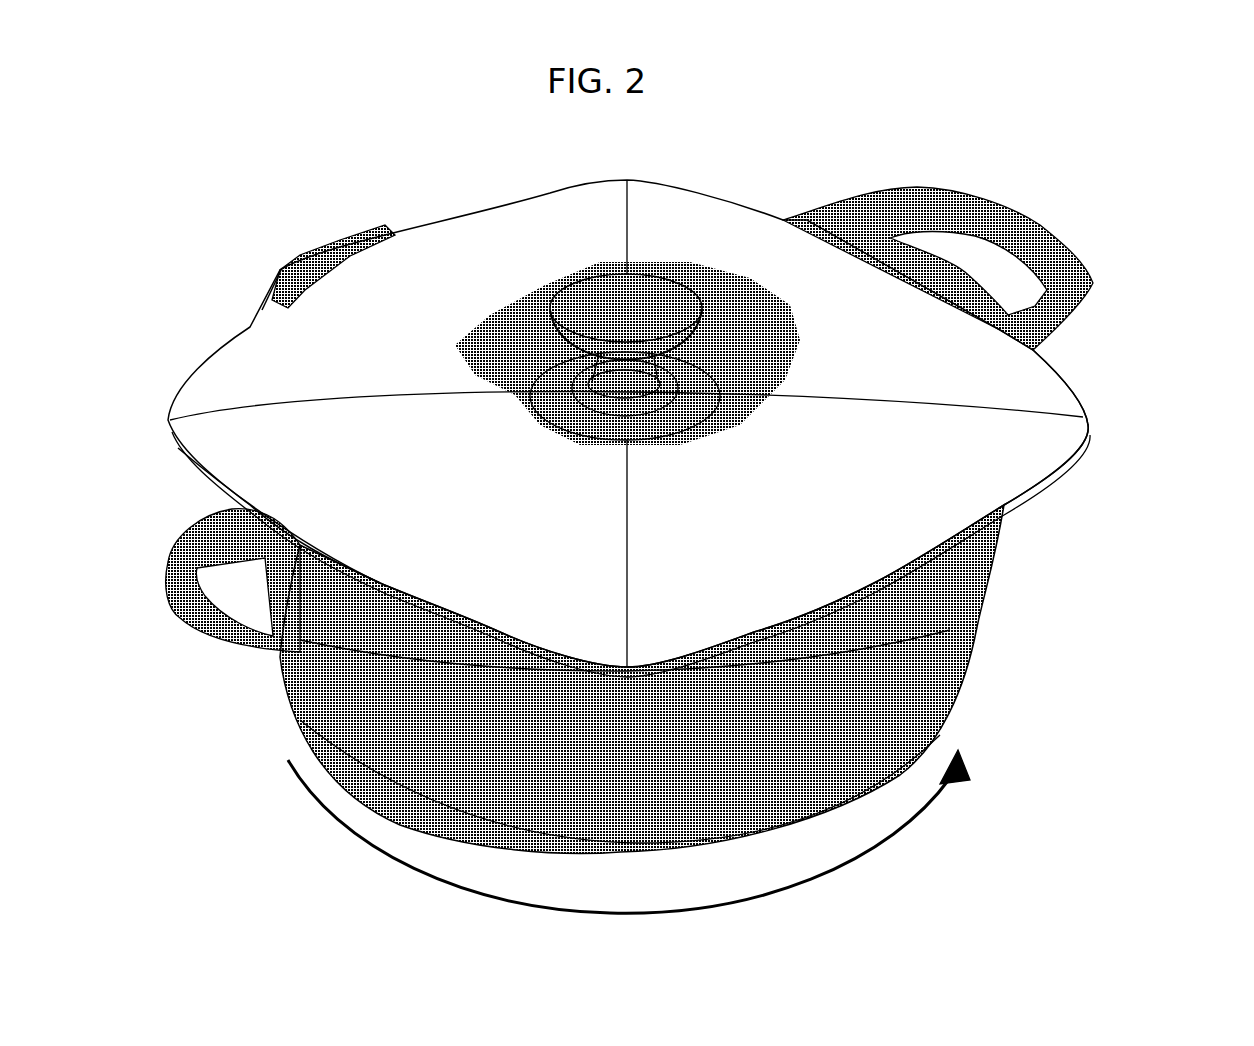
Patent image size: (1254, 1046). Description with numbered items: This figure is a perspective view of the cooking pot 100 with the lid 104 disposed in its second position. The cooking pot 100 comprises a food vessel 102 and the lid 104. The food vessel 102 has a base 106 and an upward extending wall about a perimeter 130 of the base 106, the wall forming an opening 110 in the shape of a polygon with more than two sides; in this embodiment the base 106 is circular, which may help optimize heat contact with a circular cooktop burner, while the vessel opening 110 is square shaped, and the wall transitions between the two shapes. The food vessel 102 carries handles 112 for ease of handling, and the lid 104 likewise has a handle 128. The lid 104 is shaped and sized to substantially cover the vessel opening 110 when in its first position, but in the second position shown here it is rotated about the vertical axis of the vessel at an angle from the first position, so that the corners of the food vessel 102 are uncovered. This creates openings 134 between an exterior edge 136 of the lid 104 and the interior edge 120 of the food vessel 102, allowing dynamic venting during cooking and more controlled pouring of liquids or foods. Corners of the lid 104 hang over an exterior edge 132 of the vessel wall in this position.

The cooking pot 100 is at (1112, 190).
The food vessel 102 is at (661, 550).
The lid 104 is at (670, 424).
The base 106 is at (730, 842).
The opening 110 is at (920, 590).
The handle 112 is at (238, 683).
The interior edge 120 is at (320, 275).
The handle 128 is at (575, 295).
The perimeter 130 is at (717, 831).
The exterior edge 132 is at (285, 275).
The opening 134 is at (283, 537).
The exterior edge 136 is at (1082, 455).